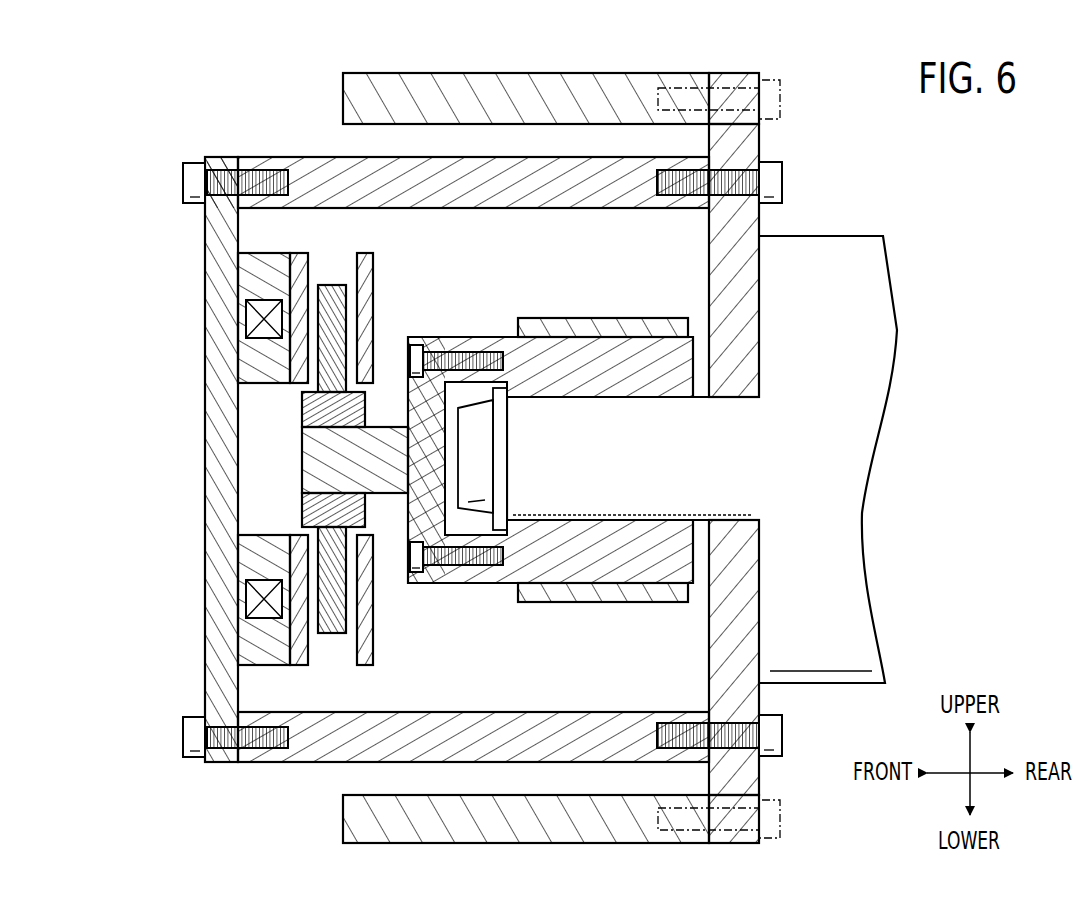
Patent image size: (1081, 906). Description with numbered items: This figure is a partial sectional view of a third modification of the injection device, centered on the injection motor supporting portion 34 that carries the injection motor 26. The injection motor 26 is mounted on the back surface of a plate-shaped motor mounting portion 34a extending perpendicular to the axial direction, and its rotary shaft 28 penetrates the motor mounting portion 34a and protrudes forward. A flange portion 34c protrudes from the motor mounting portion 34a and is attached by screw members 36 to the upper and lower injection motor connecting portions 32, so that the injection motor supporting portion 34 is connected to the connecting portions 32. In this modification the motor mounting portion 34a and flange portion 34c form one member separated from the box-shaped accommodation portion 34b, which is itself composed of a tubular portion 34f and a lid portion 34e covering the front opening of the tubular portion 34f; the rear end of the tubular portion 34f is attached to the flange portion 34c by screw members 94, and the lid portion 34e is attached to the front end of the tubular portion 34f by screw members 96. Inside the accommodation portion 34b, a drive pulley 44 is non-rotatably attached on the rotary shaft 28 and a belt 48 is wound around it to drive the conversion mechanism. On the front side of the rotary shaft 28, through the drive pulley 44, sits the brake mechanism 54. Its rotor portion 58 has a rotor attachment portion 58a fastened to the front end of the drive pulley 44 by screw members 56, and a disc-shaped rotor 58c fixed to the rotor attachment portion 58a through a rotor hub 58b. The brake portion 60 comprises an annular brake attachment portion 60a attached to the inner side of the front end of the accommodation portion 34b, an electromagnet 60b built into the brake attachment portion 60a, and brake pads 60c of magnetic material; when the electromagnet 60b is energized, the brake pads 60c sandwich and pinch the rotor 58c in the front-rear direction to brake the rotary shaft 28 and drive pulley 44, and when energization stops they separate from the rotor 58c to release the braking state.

The injection motor 26 is at (837, 235).
The rotary shaft 28 is at (745, 458).
The injection motor connecting portions 32 is at (353, 85).
The injection motor supporting portion 34 is at (465, 458).
The motor mounting portion 34a is at (742, 312).
The accommodation portion 34b is at (443, 139).
The flange portion 34c is at (737, 80).
The lid portion 34e is at (210, 158).
The tubular portion 34f is at (258, 165).
The screw members 36 is at (782, 100).
The drive pulley 44 is at (565, 563).
The belt 48 is at (610, 320).
The brake mechanism 54 is at (421, 406).
The screw members 56 is at (408, 362).
The rotor portion 58 is at (279, 491).
The rotor attachment portion 58a is at (345, 477).
The rotor hub 58b is at (303, 410).
The rotor 58c is at (332, 635).
The brake portion 60 is at (240, 313).
The brake attachment portion 60a is at (253, 570).
The electromagnet 60b is at (260, 608).
The brake pads 60c is at (367, 270).
The screw members 94 is at (777, 172).
The screw members 96 is at (188, 183).